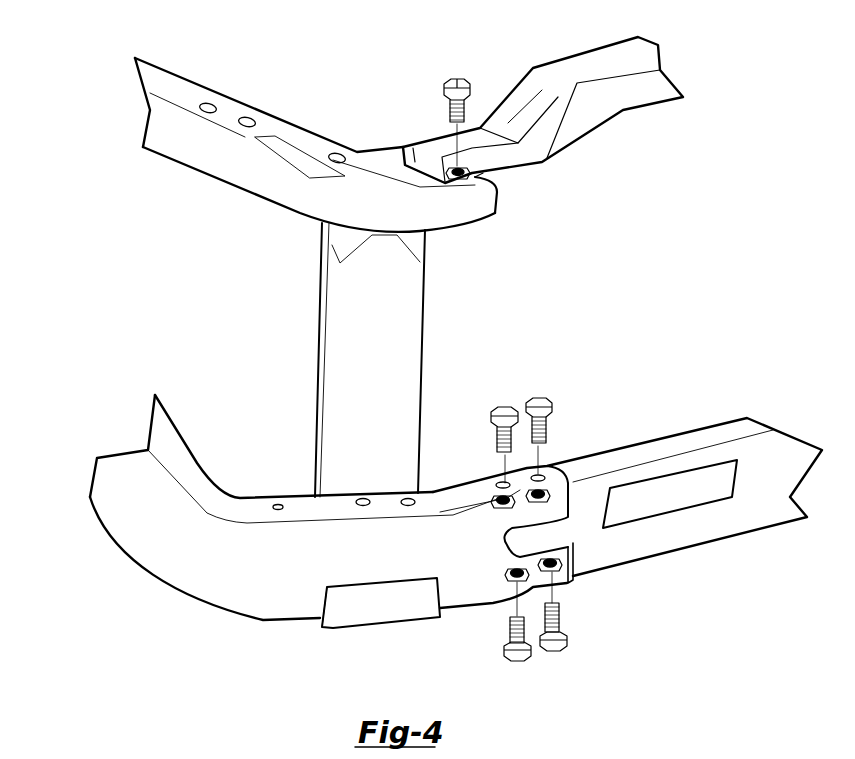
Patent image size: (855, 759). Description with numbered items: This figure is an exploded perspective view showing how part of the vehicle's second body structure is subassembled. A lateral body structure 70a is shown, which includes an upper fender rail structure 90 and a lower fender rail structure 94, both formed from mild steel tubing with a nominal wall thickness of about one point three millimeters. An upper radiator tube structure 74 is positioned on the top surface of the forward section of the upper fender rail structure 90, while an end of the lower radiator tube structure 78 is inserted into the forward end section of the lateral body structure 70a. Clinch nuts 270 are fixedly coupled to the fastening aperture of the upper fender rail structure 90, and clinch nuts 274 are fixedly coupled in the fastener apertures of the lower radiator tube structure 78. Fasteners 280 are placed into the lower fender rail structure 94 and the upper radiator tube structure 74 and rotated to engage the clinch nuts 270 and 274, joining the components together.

The lateral body structure 70a is at (95, 387).
The upper fender rail structure 90 is at (212, 160).
The upper radiator tube structure 74 is at (600, 110).
The clinch nuts 270 is at (495, 217).
The fasteners 280 is at (460, 80).
The lower fender rail structure 94 is at (270, 590).
The lower radiator tube structure 78 is at (733, 522).
The clinch nuts 274 is at (550, 497).